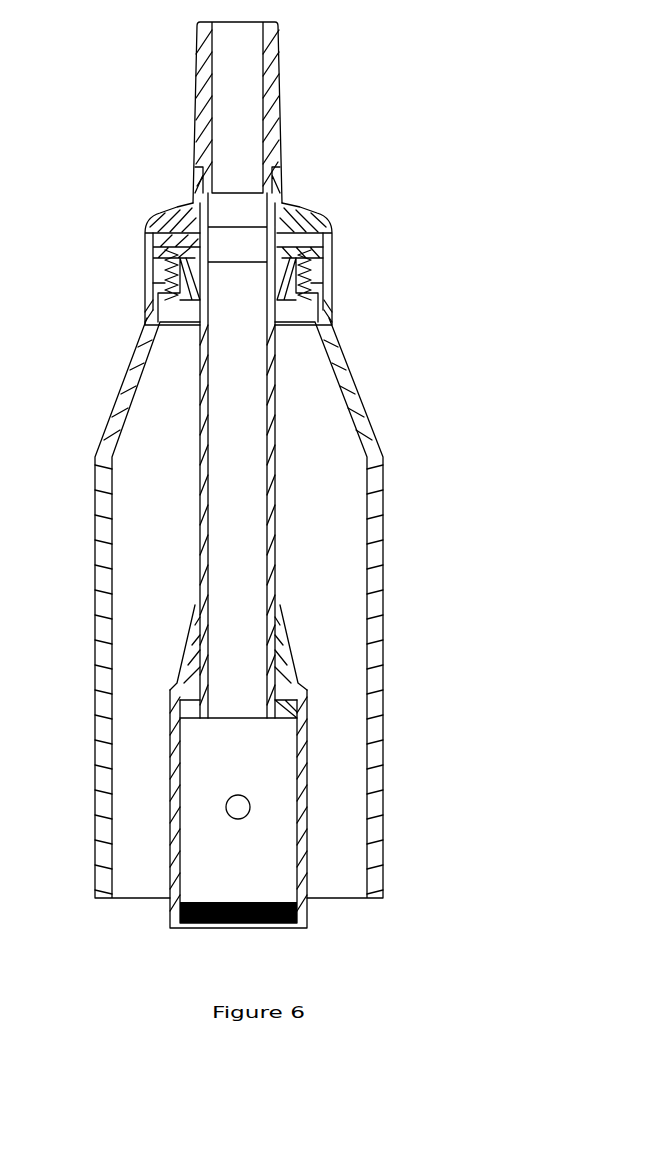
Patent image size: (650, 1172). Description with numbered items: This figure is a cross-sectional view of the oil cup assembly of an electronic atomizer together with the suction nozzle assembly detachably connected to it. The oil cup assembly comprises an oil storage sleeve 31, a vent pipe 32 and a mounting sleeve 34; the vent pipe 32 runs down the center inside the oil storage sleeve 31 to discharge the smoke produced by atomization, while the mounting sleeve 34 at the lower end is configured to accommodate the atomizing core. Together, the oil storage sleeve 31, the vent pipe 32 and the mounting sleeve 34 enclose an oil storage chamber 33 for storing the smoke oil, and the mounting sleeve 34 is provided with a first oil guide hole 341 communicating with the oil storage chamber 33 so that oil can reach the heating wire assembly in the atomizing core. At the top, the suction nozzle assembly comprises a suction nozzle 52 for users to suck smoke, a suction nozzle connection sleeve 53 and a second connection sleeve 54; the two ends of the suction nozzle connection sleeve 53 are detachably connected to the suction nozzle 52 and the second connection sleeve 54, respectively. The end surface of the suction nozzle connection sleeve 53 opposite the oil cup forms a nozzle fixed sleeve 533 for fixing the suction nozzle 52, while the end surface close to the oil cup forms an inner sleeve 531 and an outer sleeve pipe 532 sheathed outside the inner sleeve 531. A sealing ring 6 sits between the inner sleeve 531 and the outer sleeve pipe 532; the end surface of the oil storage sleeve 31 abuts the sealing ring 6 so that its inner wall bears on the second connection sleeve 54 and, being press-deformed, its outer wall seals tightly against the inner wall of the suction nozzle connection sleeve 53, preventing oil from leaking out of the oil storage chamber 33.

The suction nozzle 52 is at (282, 107).
The nozzle fixed sleeve 533 is at (193, 181).
The suction nozzle connection sleeve 53 is at (312, 218).
The inner sleeve 531 is at (150, 233).
The outer sleeve pipe 532 is at (147, 279).
The sealing ring 6 is at (322, 243).
The second connection sleeve 54 is at (324, 275).
The oil storage sleeve 31 is at (338, 353).
The vent pipe 32 is at (270, 499).
The oil storage chamber 33 is at (333, 707).
The mounting sleeve 34 is at (300, 755).
The first oil guide hole 341 is at (244, 809).